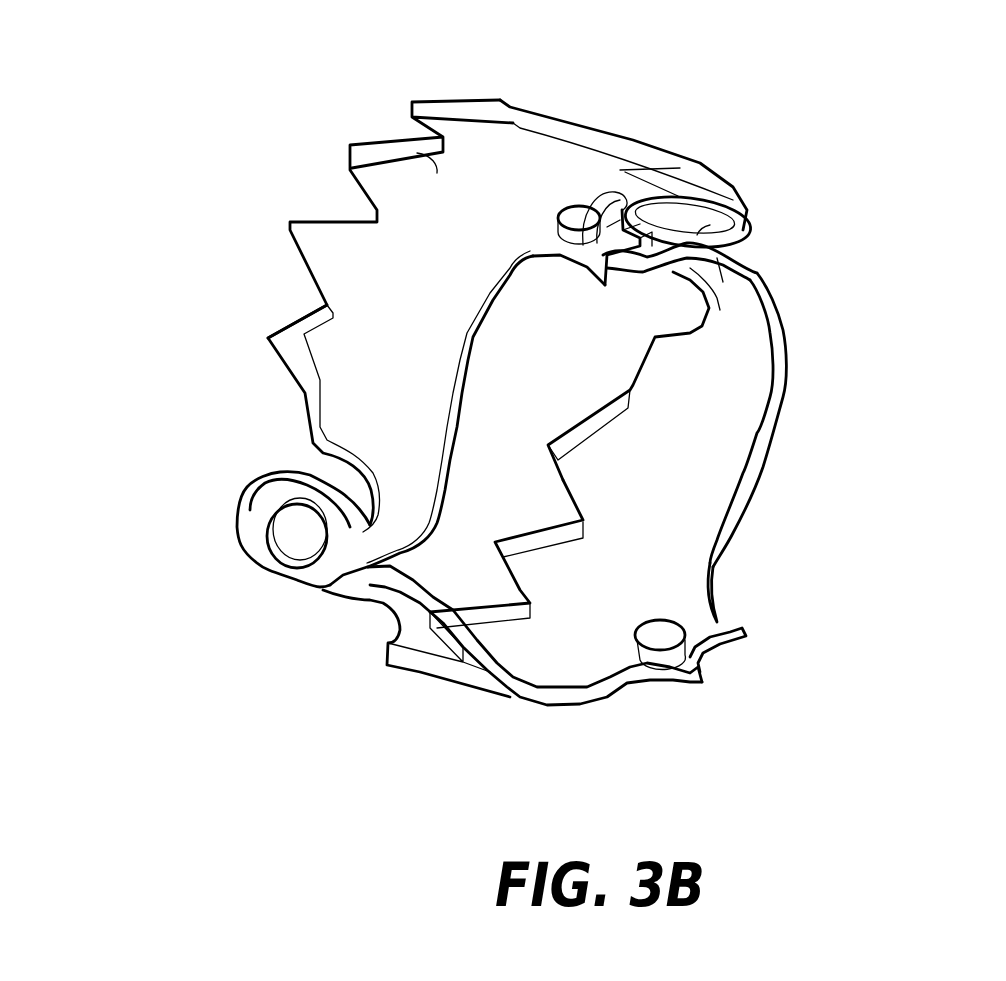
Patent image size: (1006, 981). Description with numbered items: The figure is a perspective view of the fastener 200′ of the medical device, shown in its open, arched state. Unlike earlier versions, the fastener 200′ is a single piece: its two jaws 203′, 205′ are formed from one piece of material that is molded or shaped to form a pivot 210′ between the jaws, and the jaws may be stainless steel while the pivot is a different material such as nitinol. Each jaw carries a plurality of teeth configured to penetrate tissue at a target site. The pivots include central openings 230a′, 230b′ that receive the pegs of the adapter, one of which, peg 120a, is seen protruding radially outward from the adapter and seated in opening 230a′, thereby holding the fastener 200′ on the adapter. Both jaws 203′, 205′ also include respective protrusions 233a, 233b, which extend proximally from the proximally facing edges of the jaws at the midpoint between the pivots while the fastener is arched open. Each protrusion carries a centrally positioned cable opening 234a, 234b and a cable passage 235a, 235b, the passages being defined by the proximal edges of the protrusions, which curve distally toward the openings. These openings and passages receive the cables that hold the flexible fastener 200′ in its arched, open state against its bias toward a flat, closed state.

The jaw 203′ is at (390, 154).
The fastener 200′ is at (289, 391).
The cable opening 234a is at (570, 227).
The protrusion 233a is at (636, 224).
The central opening 230b′ is at (687, 193).
The cable passage 235a is at (605, 285).
The jaw 205′ is at (707, 420).
The protrusion 233b is at (717, 623).
The cable passage 235b is at (720, 643).
The cable opening 234b is at (663, 647).
The pivot 210′ is at (273, 518).
The central opening 230a′ is at (303, 548).
The peg 120a is at (308, 567).